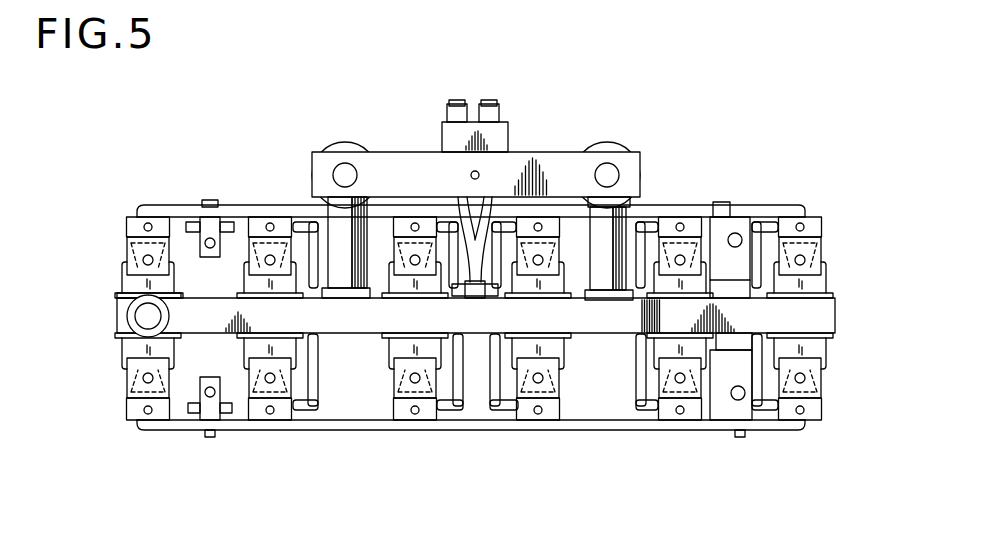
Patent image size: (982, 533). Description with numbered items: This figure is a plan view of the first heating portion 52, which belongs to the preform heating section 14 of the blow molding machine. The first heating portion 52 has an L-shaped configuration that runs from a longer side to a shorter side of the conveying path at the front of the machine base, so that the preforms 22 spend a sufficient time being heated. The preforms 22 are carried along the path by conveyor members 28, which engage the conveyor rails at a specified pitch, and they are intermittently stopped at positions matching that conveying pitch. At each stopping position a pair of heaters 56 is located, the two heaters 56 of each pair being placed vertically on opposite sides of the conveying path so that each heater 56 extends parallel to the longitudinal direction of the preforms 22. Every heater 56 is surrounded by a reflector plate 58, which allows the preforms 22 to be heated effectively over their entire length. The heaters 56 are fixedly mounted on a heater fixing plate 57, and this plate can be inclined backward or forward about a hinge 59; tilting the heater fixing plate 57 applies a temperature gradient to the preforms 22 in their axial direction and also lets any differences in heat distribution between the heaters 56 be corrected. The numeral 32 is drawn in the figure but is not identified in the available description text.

The preform heating section 14 is at (751, 156).
The preform 22 is at (146, 316).
The conveyor member 28 is at (112, 333).
The bearing plate 32 is at (142, 296).
The first heating portion 52 is at (664, 167).
The heater 56 is at (273, 378).
The heater fixing plate 57 is at (242, 206).
The reflector plate 58 is at (296, 344).
The hinge 59 is at (207, 229).